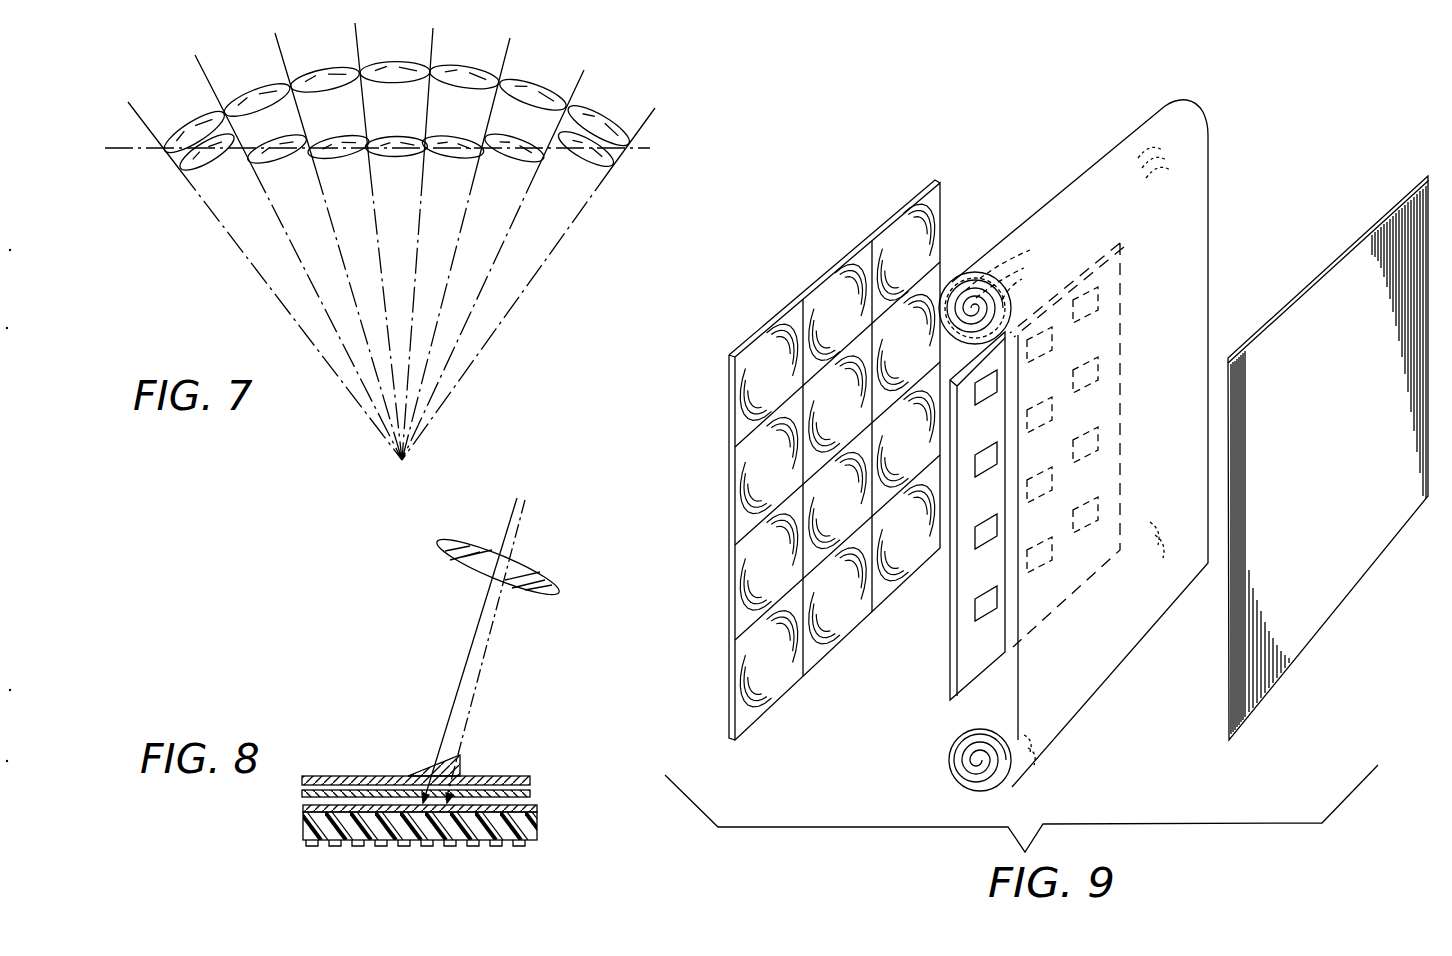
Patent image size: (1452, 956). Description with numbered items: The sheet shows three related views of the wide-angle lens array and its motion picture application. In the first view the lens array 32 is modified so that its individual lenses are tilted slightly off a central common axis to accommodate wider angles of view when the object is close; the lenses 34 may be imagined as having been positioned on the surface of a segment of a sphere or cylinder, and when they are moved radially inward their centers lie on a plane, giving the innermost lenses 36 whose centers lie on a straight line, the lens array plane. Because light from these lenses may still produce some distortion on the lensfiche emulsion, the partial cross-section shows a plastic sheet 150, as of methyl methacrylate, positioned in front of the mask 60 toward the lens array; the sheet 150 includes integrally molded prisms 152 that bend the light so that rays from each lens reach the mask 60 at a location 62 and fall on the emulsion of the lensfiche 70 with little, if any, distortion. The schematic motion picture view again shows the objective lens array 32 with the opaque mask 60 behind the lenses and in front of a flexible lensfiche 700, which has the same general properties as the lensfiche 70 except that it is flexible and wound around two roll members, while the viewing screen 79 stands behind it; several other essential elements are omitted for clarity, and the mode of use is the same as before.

In FIG. 7, the lens array 32 is at (632, 154).
In FIG. 9, the lens array 32 is at (747, 334).
In FIG. 7, the lens 34 is at (598, 118).
In FIG. 8, the lens 34 is at (520, 563).
In FIG. 7, the lens (second array) 36 is at (525, 157).
In FIG. 8, the opaque mask 60 is at (540, 791).
In FIG. 9, the opaque mask 60 is at (973, 663).
In FIG. 8, the aperture in mask layer 62 is at (437, 799).
In FIG. 8, the lensfiche 70 is at (547, 820).
In FIG. 9, the viewing screen 79 is at (1334, 562).
In FIG. 8, the plastic sheet 150 is at (480, 776).
In FIG. 8, the prisms 152 is at (453, 758).
In FIG. 9, the flexible lensfiche 700 is at (1092, 156).